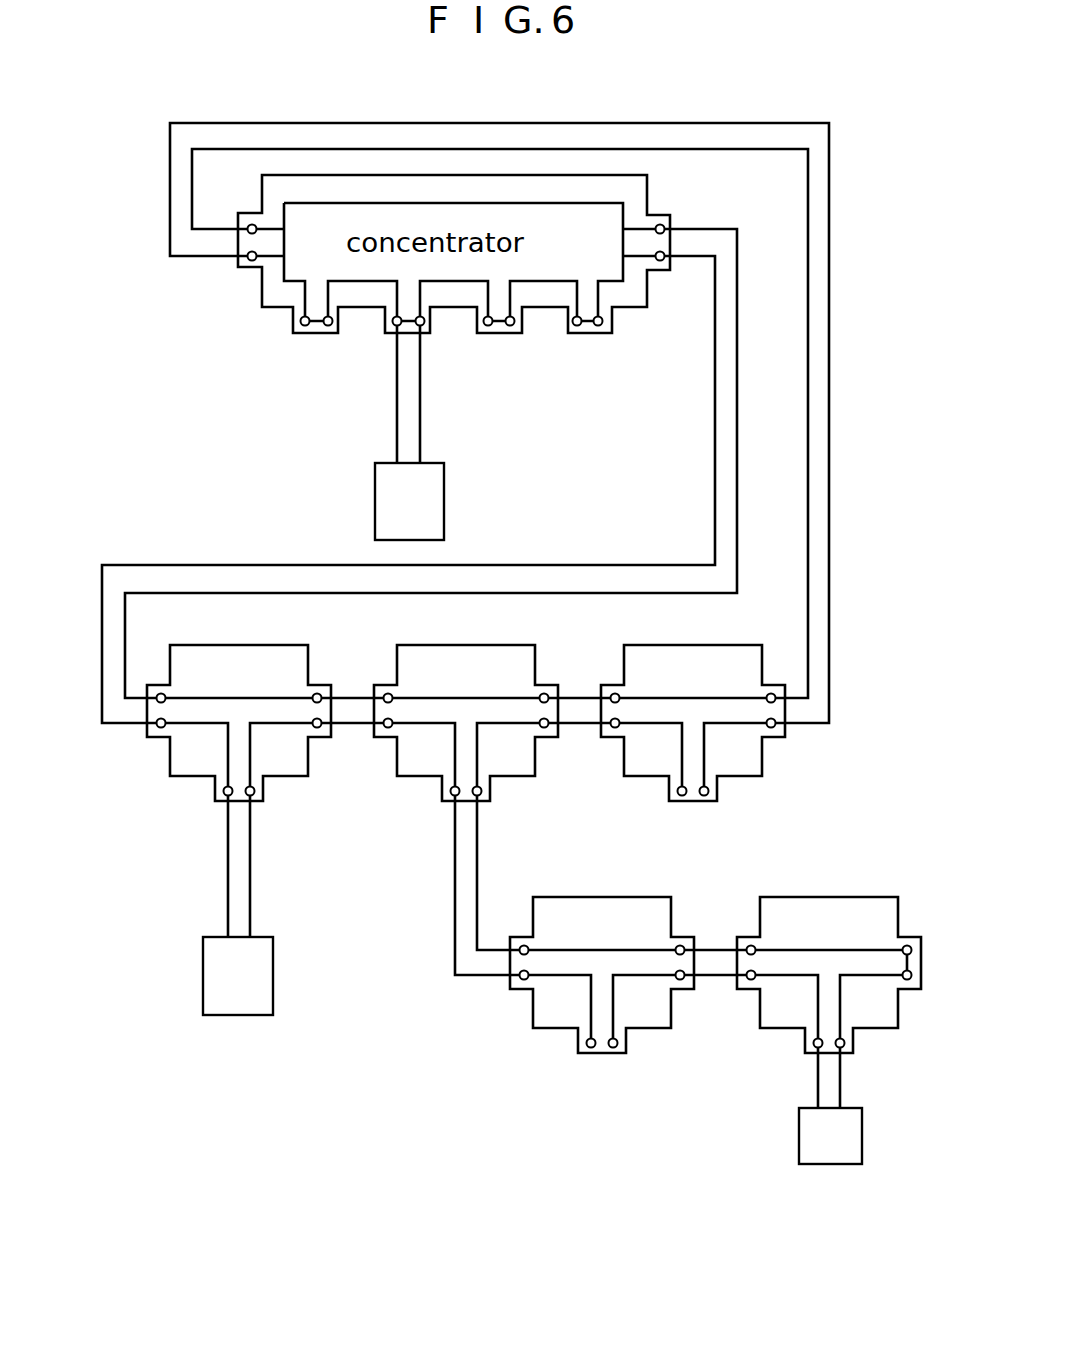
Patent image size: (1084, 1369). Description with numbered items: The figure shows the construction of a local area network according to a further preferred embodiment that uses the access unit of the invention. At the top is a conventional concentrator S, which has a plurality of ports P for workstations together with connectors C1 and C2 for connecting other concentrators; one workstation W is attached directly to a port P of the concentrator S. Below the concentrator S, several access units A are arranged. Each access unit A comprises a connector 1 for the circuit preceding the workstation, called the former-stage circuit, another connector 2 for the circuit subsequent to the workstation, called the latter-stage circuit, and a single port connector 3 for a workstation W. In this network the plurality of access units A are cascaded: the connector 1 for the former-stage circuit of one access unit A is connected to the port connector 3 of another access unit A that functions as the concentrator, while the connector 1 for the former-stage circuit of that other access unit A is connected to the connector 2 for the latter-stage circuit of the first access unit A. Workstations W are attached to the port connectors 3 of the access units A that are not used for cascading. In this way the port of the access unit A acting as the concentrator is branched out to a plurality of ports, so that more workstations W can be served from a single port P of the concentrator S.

The connector for the former-stage circuit 1 is at (144, 711).
The connector for the latter-stage circuit 2 is at (323, 710).
The port connector 3 is at (230, 798).
The access unit A is at (271, 644).
The concentrator S is at (263, 325).
The connector C1 is at (243, 242).
The connector C2 is at (666, 243).
The port P is at (383, 326).
The workstation W is at (444, 511).